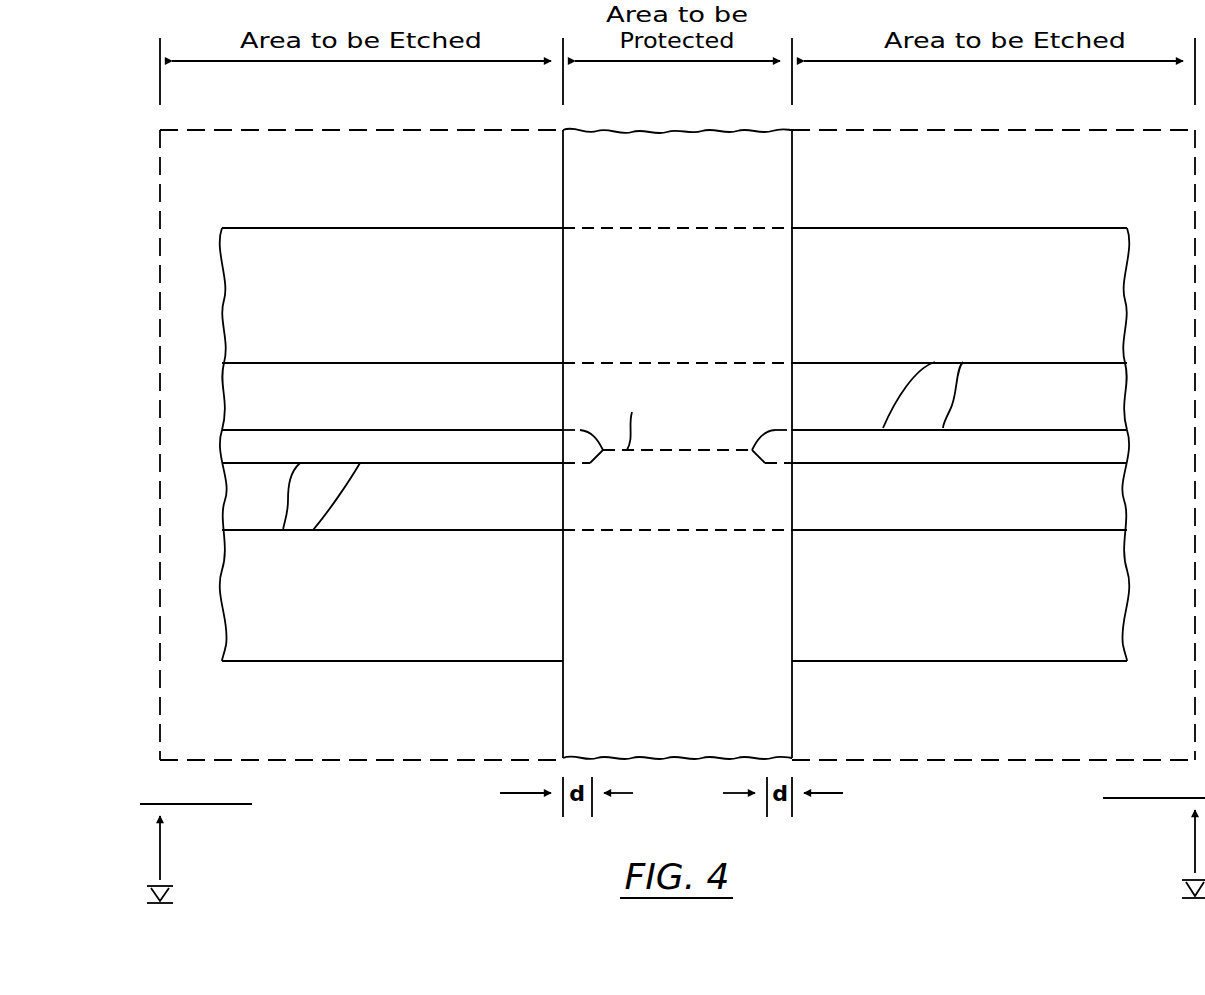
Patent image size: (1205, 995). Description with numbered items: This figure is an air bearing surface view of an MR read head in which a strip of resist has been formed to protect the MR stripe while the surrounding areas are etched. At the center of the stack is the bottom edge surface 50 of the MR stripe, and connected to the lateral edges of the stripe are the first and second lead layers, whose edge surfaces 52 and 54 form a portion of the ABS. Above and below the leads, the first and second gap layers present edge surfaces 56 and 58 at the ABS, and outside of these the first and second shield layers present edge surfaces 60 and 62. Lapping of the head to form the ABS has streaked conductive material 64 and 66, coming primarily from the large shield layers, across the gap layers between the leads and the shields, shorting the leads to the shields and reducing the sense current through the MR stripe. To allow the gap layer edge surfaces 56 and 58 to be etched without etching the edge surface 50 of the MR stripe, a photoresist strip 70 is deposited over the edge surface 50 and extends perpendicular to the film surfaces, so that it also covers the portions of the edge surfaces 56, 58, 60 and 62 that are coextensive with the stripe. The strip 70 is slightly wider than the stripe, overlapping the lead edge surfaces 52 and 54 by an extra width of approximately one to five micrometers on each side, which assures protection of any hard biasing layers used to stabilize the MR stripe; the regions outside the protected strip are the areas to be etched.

The bottom edge surface of the MR stripe 50 is at (680, 457).
The edge surface of first lead layer L1 52 is at (457, 450).
The edge surface of second lead layer L2 54 is at (905, 447).
The edge surface of first gap layer G1 56 is at (495, 503).
The edge surface of second gap layer G2 58 is at (461, 398).
The edge surface of first shield layer S1 60 is at (878, 617).
The edge surface of second shield layer S2 62 is at (841, 320).
The streaked conductive material 64 is at (315, 497).
The streaked conductive material 66 is at (938, 398).
The photoresist strip 70 is at (665, 168).